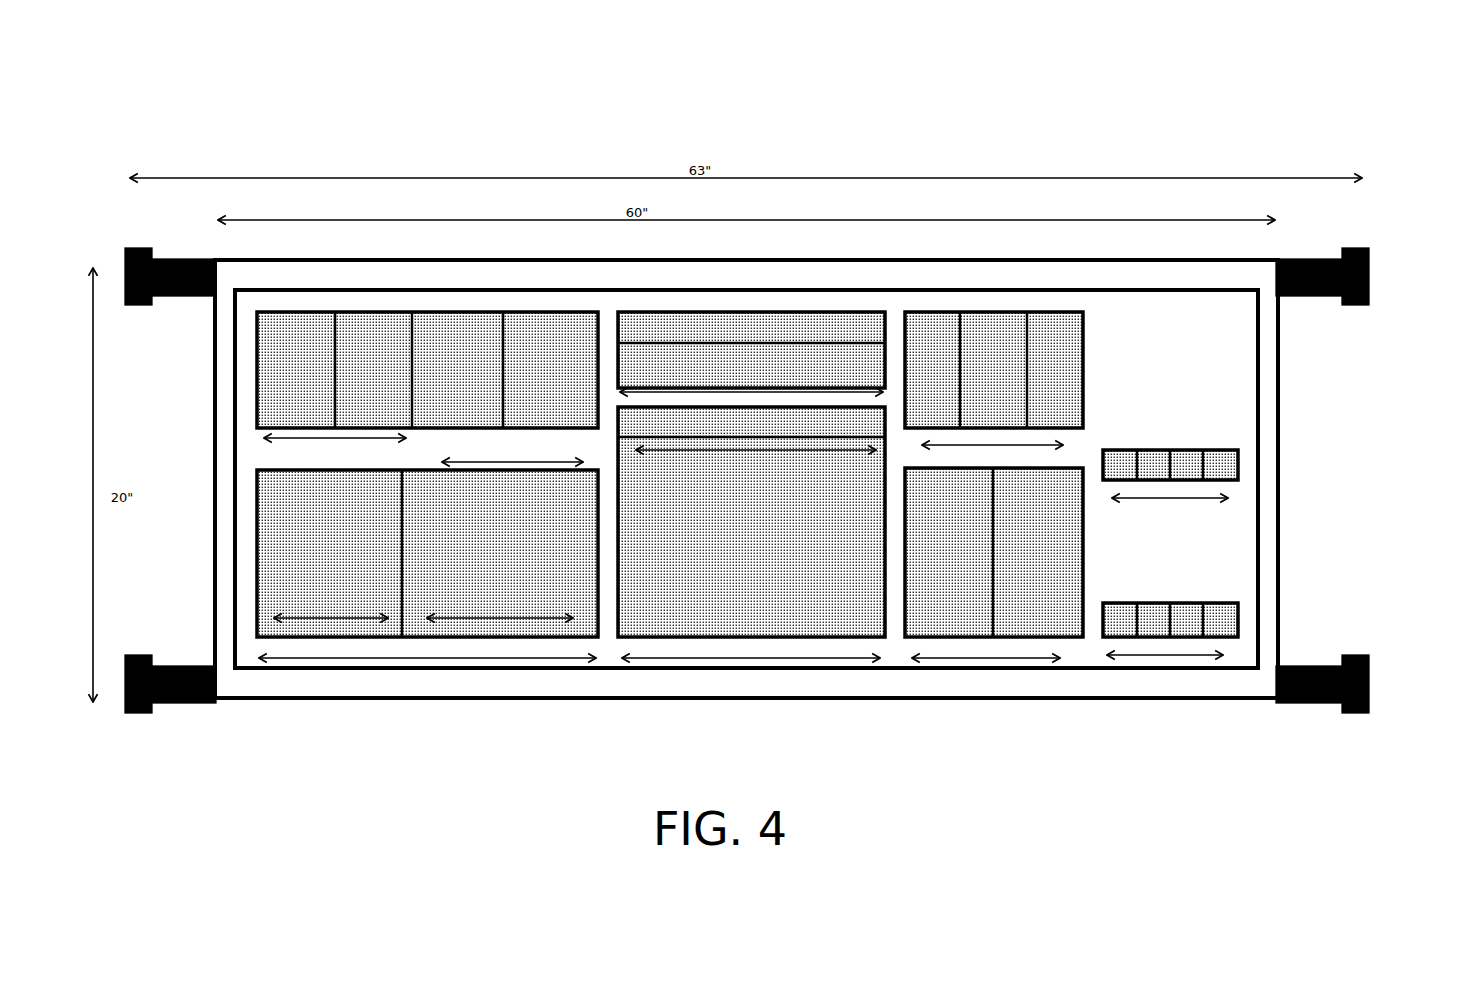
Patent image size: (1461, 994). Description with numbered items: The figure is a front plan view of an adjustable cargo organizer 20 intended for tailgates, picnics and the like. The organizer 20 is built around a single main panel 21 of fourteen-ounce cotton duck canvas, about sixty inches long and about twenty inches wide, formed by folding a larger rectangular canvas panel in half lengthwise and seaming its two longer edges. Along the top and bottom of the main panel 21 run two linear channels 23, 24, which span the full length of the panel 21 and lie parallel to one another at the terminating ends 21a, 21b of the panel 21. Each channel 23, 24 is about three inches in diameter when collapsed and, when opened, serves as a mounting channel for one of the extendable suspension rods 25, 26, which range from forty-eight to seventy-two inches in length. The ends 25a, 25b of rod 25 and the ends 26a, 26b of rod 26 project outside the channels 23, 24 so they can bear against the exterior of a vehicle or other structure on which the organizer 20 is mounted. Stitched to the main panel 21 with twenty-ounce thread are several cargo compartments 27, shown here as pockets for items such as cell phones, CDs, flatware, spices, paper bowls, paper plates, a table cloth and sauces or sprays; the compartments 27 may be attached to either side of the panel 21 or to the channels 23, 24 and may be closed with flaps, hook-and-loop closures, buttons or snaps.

The adjustable cargo organizer 20 is at (188, 156).
The main panel 21 is at (815, 261).
The terminating end of the panel 21a is at (1278, 422).
The terminating end of the panel 21b is at (219, 487).
The linear channel 23 is at (418, 283).
The linear channel 24 is at (645, 682).
The suspension rod 25 is at (190, 262).
The end of rod 25a is at (1358, 248).
The end of rod 25b is at (143, 250).
The suspension rod 26 is at (185, 702).
The end of rod 26a is at (1356, 712).
The end of rod 26b is at (143, 712).
The cargo compartments 27 is at (481, 314).